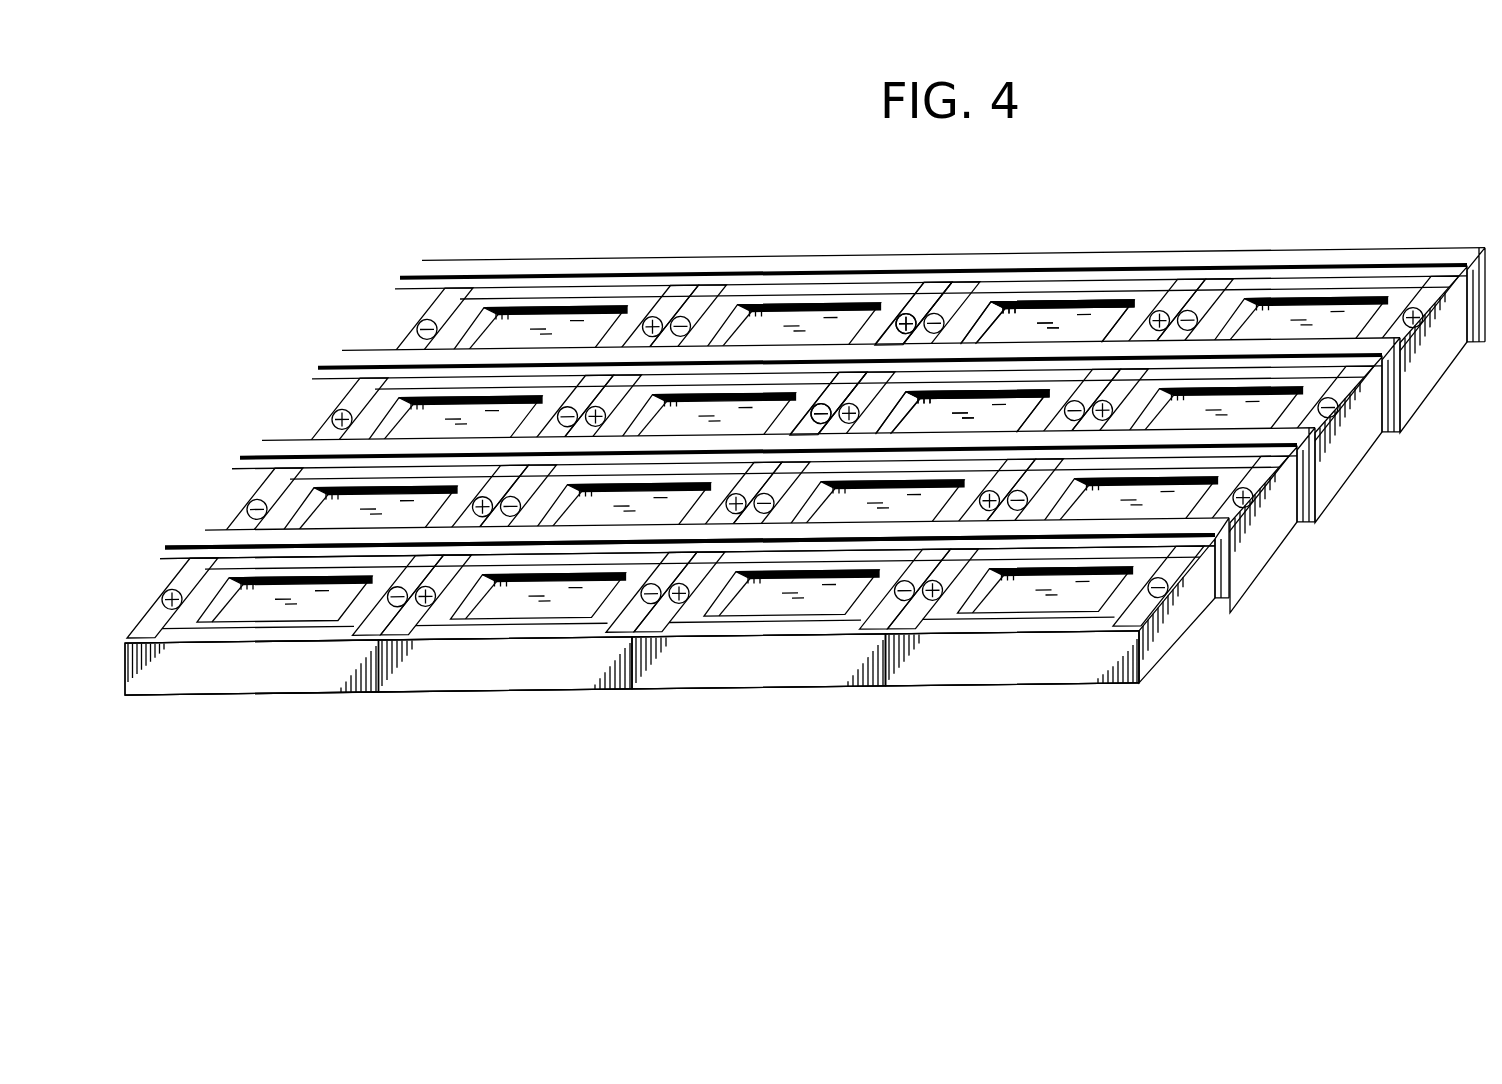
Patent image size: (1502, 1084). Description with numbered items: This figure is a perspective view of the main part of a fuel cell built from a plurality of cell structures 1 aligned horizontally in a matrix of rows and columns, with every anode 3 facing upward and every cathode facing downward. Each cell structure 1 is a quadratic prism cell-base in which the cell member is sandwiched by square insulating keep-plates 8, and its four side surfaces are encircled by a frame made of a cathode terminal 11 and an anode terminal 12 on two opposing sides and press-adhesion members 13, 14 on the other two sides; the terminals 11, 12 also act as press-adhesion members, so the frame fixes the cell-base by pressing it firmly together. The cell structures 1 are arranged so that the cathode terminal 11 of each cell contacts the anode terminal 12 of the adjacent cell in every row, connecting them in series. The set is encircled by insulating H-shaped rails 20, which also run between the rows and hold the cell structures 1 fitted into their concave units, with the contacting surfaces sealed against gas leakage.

The cell structure 1 is at (656, 708).
The anode 3 is at (985, 415).
The insulating keep-plate 8 is at (806, 415).
The cathode terminal 11 is at (886, 640).
The anode terminal 12 is at (911, 642).
The press-adhesion member 13 is at (283, 682).
The press-adhesion member 14 is at (824, 563).
The insulating H-shaped rail 20 is at (1482, 338).